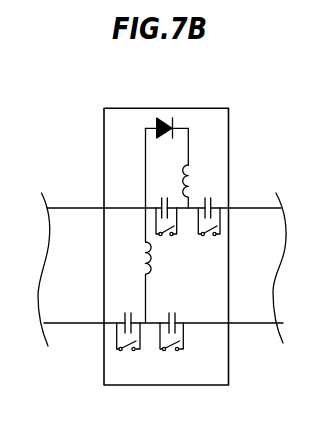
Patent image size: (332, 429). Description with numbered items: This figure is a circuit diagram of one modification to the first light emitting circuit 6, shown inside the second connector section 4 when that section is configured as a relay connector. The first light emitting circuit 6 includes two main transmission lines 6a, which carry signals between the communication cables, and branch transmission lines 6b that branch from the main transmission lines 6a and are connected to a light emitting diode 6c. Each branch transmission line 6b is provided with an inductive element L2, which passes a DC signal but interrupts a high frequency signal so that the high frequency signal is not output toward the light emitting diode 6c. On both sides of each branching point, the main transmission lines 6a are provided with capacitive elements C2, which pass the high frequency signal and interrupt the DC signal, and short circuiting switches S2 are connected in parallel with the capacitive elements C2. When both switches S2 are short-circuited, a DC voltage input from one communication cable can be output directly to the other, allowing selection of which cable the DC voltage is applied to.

The second connector section 4 is at (103, 109).
The first light emitting circuit 6 is at (202, 133).
The main transmission lines 6a is at (113, 208).
The branch transmission lines 6b is at (139, 224).
The light emitting diode 6c is at (165, 119).
The inductive elements L2 is at (165, 233).
The capacitive elements C2 is at (168, 254).
The short circuiting switches S2 is at (169, 292).